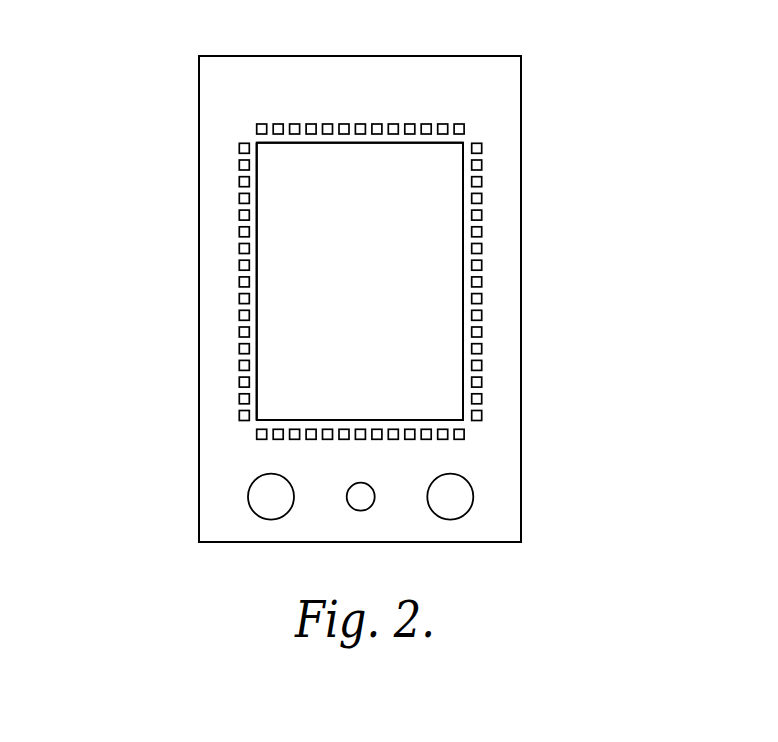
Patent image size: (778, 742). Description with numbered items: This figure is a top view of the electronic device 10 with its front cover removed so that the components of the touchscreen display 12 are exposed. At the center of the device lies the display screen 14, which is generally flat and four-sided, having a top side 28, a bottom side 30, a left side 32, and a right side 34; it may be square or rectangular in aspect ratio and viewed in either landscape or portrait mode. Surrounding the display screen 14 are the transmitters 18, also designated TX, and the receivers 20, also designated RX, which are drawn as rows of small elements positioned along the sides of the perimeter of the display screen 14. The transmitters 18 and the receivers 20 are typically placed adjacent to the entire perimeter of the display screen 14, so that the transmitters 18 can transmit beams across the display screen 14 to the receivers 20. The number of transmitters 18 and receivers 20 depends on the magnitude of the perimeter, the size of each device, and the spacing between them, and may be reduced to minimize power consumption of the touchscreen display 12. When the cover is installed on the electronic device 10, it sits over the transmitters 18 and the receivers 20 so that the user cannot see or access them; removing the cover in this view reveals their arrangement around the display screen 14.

The electronic device 10 is at (364, 297).
The touchscreen display 12 is at (562, 133).
The display screen 14 is at (380, 275).
The transmitters 18 is at (355, 297).
The receivers 20 is at (358, 115).
The top side 28 is at (392, 143).
The bottom side 30 is at (318, 420).
The left side 32 is at (257, 302).
The right side 34 is at (463, 308).